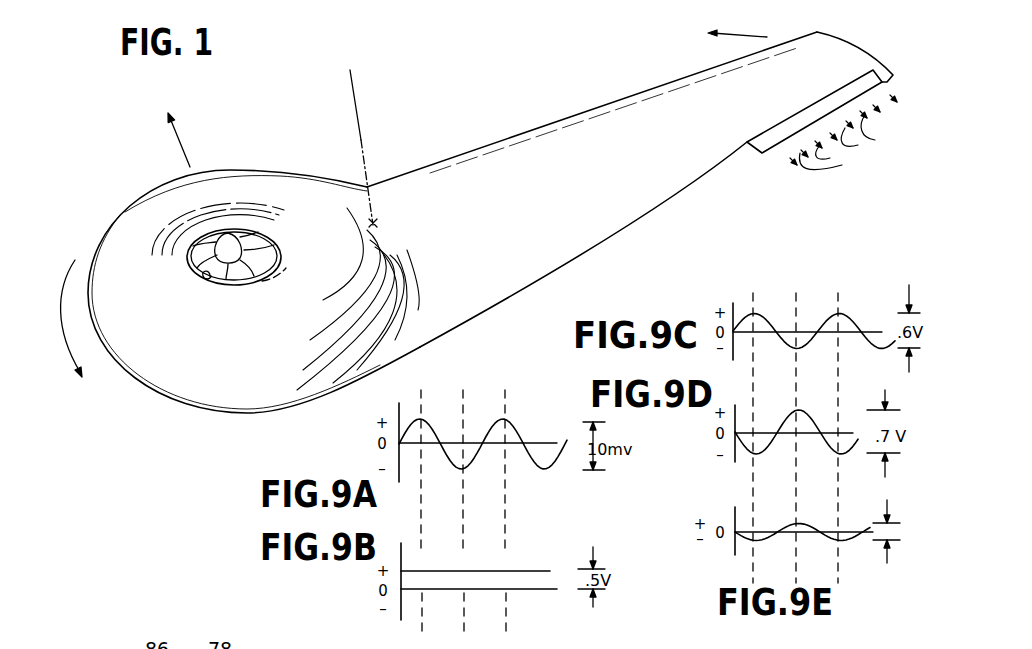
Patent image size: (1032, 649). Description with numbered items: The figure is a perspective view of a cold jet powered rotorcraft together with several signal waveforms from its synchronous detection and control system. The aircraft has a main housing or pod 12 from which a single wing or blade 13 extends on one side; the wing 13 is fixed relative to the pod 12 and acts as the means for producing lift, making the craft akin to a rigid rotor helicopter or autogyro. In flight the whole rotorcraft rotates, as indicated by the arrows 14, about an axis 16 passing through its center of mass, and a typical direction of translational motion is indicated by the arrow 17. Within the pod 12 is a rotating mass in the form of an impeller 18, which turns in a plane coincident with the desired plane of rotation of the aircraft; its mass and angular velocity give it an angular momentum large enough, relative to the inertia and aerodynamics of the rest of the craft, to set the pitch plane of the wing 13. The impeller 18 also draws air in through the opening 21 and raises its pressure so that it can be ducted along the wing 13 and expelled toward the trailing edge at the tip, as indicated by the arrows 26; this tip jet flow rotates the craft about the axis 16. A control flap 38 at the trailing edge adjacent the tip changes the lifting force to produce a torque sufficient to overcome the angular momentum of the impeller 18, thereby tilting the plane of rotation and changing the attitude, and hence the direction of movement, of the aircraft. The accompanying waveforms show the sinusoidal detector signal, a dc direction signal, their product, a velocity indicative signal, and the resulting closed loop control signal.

The main housing or pod 12 is at (221, 397).
The wing or blade 13 is at (613, 124).
The arrows indicating rotation 14 is at (750, 34).
The axis 16 is at (362, 133).
The arrow indicating translational motion 17 is at (188, 154).
The impeller 18 is at (262, 245).
The opening 21 is at (210, 276).
The arrows indicating expelled air 26 is at (843, 133).
The control flap 38 is at (768, 143).